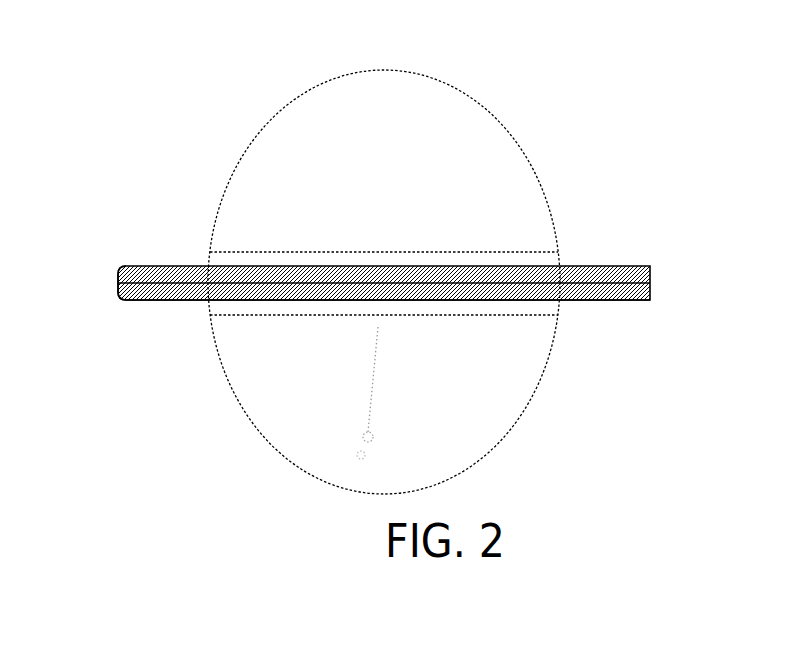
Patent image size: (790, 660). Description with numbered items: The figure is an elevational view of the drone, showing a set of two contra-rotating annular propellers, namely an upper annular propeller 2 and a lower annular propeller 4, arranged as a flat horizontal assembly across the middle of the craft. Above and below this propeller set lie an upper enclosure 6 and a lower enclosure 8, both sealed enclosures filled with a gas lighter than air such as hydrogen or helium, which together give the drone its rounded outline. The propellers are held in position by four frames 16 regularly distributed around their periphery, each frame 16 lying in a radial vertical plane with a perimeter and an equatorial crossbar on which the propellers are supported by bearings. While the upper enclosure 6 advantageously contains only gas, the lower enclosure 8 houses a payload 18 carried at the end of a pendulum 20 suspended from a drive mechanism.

The upper annular propeller 2 is at (354, 278).
The lower annular propeller 4 is at (626, 300).
The upper enclosure 6 is at (445, 82).
The lower enclosure 8 is at (492, 450).
The frame 16 is at (120, 272).
The payload 18 is at (366, 440).
The pendulum 20 is at (374, 375).